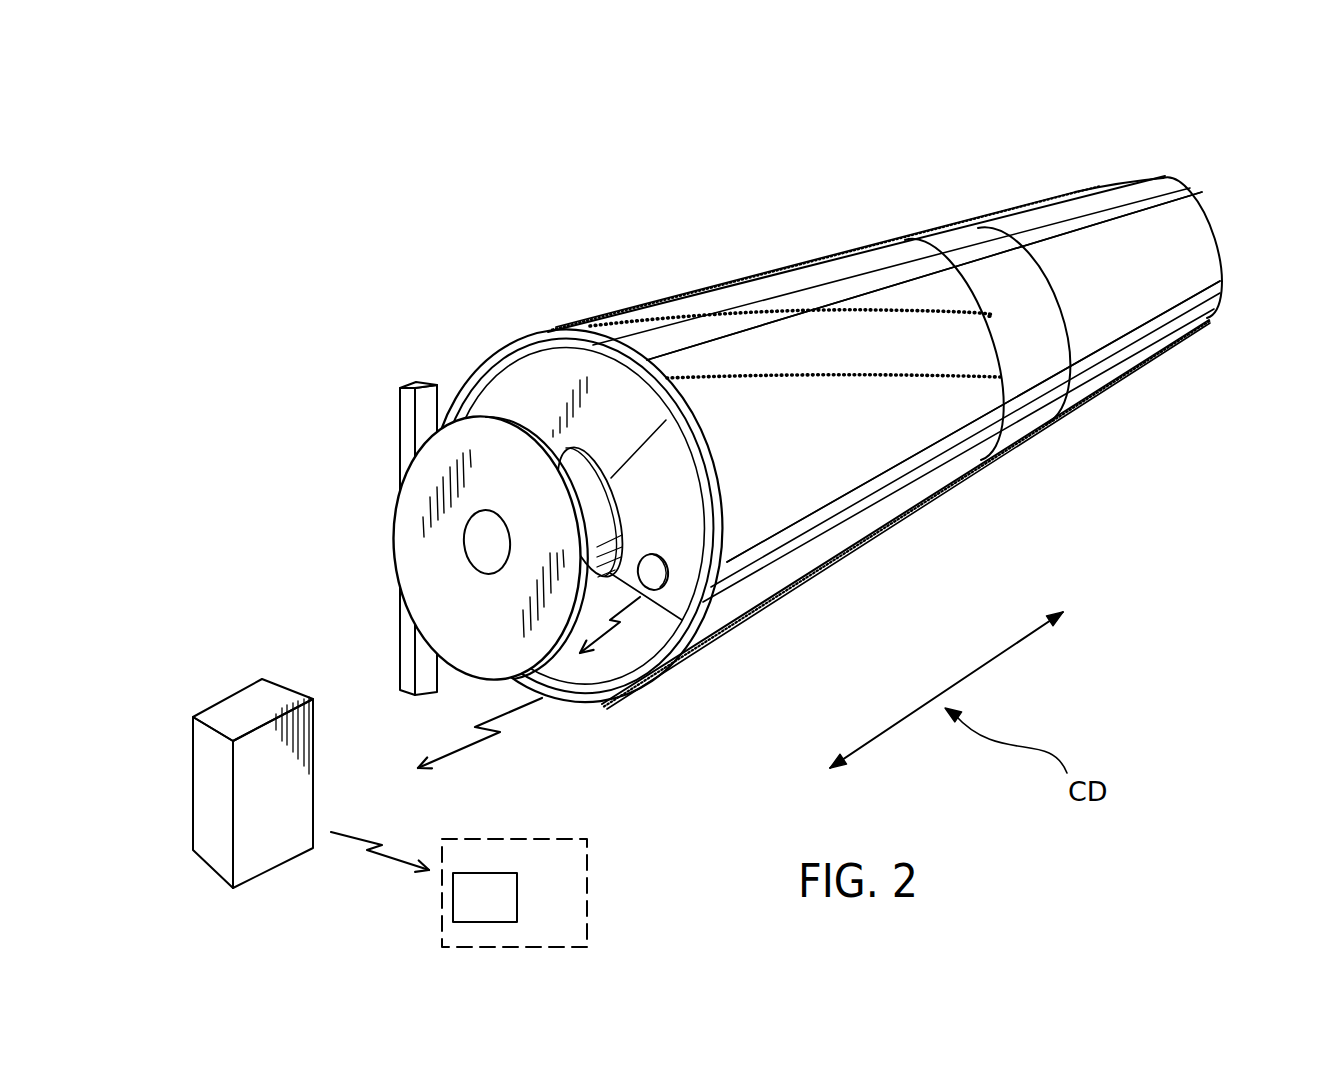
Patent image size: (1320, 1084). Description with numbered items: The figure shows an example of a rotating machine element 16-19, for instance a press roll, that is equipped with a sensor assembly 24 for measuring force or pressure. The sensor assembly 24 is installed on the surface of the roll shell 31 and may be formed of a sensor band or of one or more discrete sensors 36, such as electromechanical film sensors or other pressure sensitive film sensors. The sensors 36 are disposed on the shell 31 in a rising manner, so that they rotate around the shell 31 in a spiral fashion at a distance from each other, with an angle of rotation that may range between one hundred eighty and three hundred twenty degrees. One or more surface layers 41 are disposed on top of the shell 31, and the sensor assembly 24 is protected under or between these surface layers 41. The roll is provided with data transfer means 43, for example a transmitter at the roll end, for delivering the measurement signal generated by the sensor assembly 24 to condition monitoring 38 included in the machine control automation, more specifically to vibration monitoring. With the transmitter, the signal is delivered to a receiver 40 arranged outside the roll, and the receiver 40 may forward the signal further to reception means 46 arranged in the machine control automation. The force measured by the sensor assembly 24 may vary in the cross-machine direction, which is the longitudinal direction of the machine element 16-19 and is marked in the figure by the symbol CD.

The rotating machine element 16-19 is at (1103, 170).
The sensor assembly 24 is at (779, 345).
The roll shell 31 is at (810, 550).
The sensors 36 is at (820, 313).
The condition monitoring 38 is at (568, 913).
The receiver 40 is at (210, 668).
The surface layers 41 is at (1063, 257).
The data transfer means 43 is at (660, 582).
The reception means 46 is at (500, 913).